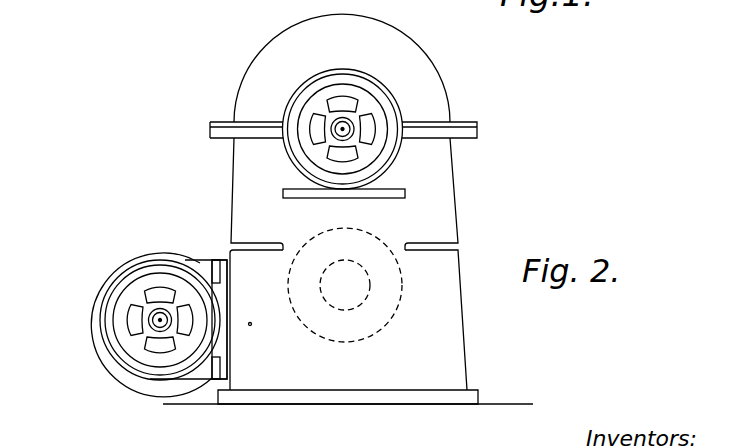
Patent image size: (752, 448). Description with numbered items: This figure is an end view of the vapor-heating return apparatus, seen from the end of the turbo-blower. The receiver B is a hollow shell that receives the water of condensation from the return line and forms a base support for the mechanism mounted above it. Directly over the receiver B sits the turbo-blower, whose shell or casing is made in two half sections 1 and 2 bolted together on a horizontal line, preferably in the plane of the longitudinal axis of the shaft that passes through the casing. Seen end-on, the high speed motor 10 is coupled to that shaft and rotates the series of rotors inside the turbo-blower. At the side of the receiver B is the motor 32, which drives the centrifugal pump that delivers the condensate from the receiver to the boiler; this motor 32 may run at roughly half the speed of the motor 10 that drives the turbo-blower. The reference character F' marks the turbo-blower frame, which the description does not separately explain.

The frame F' is at (343, 73).
The half section 1 is at (342, 68).
The half section 2 is at (344, 194).
The high speed motor 10 is at (376, 101).
The motor 32 is at (92, 307).
The receiver B is at (348, 316).